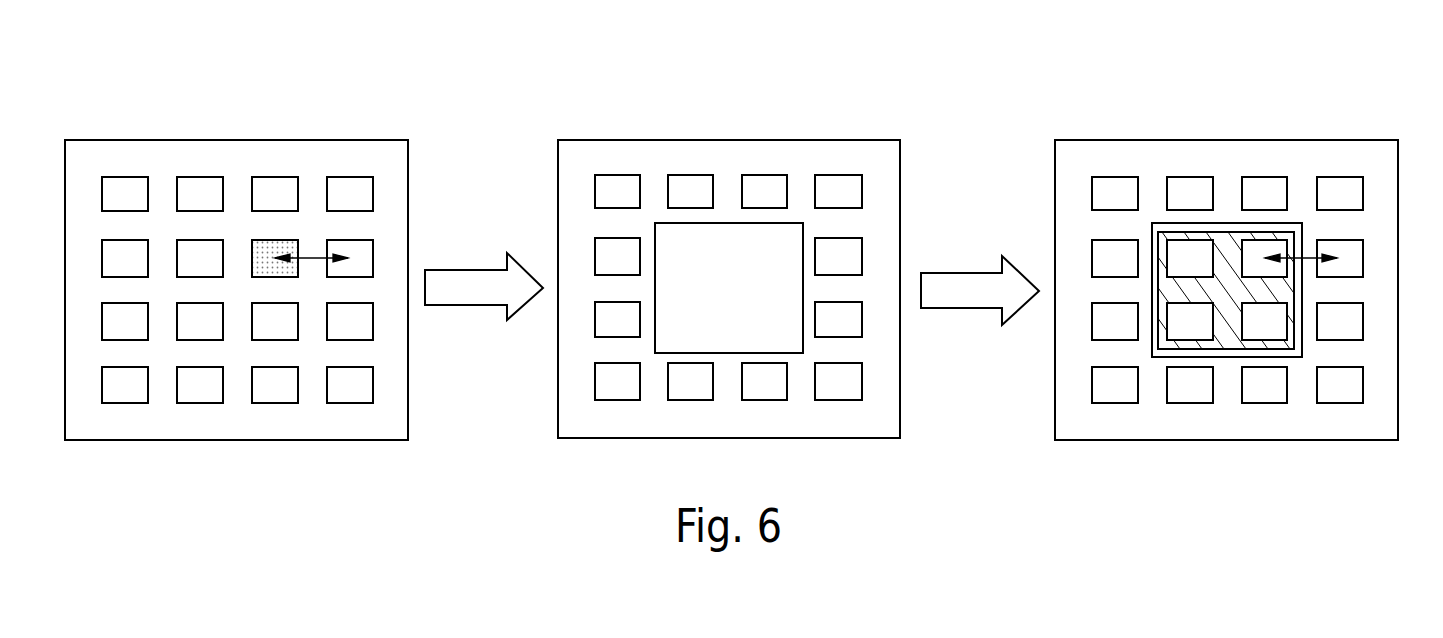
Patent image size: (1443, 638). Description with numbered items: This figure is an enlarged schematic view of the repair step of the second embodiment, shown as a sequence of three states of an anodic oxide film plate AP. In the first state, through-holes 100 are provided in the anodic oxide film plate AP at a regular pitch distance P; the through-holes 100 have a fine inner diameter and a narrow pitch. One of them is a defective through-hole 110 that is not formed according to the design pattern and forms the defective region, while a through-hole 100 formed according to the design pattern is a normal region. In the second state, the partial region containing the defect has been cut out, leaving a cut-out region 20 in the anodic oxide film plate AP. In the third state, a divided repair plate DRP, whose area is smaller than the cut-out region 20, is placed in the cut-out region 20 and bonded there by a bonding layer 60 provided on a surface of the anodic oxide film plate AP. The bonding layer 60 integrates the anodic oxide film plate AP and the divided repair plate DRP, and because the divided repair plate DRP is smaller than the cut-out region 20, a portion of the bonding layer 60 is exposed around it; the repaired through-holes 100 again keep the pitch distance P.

The defective through-hole 110 is at (267, 255).
The through-hole 100 is at (350, 190).
The cut-out region 20 is at (735, 280).
The bonding layer 60 is at (1223, 350).
The divided repair plate DRP is at (1275, 357).
The anodic oxide film plate AP is at (1357, 441).
The pitch distance P is at (806, 239).